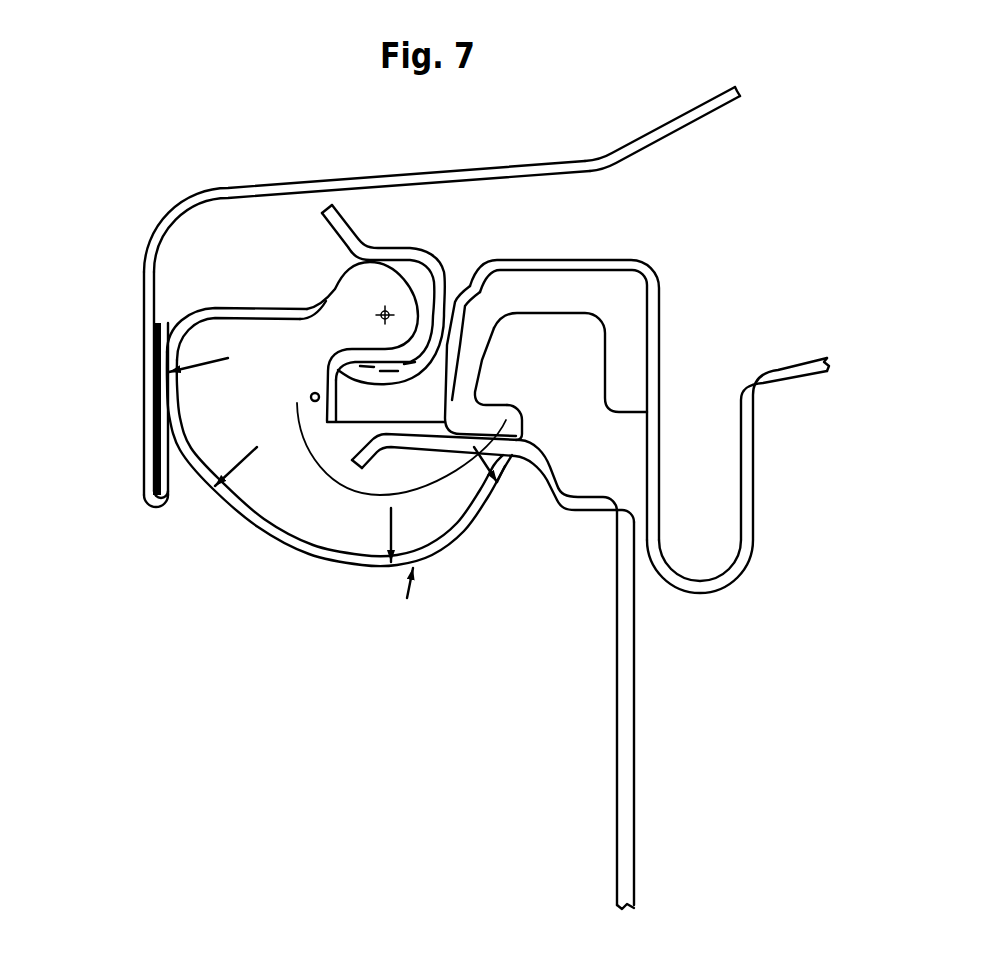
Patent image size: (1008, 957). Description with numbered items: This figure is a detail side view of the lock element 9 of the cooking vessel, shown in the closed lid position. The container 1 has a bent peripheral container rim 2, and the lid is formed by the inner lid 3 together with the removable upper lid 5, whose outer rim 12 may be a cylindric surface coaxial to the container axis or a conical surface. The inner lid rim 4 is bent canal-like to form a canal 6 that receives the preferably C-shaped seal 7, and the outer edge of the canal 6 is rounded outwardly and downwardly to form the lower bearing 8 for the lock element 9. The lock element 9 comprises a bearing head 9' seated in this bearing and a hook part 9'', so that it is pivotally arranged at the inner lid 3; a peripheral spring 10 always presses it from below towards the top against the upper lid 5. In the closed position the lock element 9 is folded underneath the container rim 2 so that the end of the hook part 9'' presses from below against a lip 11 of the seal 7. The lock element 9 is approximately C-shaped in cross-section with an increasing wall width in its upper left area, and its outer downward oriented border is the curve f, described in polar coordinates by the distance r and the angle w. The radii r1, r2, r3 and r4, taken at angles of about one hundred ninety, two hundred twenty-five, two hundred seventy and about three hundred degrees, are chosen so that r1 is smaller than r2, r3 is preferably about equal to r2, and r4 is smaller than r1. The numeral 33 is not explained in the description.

The container 1 is at (612, 780).
The container rim 2 is at (422, 445).
The inner lid 3 is at (813, 371).
The inner lid rim 4 is at (508, 265).
The upper lid 5 is at (693, 107).
The canal 6 is at (542, 363).
The seal 7 is at (573, 287).
The lower bearing 8 is at (343, 238).
The lock element 9 is at (339, 490).
The bearing head 9' is at (376, 268).
The hook part 9'' is at (340, 488).
The peripheral spring 10 is at (305, 408).
The lip 11 is at (507, 423).
The outer rim 12 is at (150, 446).
The wall of sealing lip 33 is at (212, 310).
The radius r1 is at (198, 353).
The radius r2 is at (236, 461).
The radius r3 is at (374, 534).
The radius r4 is at (401, 449).
The curve f is at (410, 597).